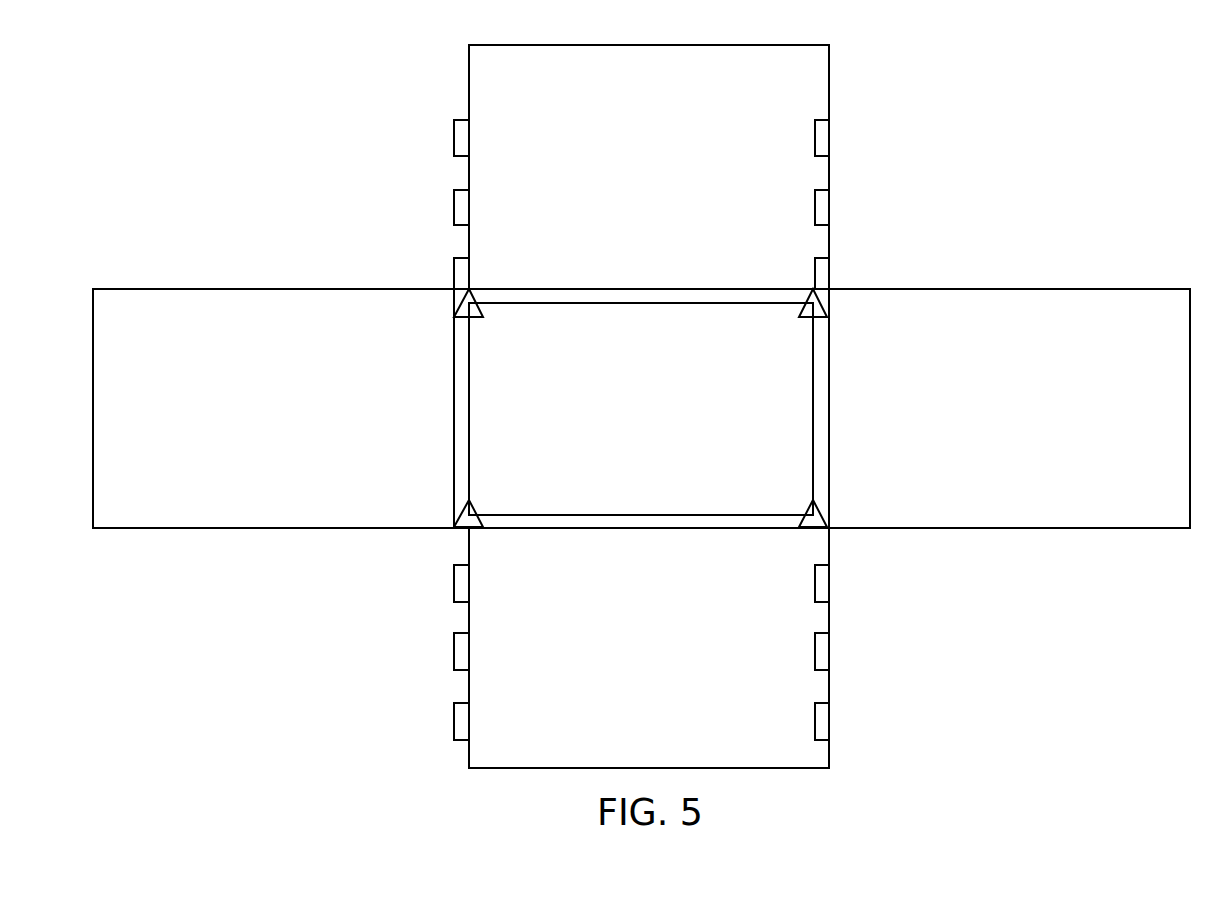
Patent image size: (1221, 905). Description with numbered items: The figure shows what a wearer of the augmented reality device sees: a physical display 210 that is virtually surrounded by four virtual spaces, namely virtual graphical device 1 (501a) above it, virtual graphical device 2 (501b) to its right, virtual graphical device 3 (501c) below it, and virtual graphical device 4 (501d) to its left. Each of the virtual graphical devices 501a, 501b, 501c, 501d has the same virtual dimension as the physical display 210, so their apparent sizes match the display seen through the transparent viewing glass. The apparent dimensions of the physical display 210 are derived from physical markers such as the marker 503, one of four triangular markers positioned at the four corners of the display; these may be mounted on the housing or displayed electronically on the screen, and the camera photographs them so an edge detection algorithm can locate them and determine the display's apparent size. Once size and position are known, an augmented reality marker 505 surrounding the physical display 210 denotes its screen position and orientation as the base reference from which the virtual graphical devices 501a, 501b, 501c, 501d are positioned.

The virtual graphical device 1 501a is at (622, 236).
The virtual graphical device 2 501b is at (982, 458).
The virtual graphical device 3 501c is at (622, 734).
The virtual graphical device 4 501d is at (245, 458).
The physical display 210 is at (662, 470).
The marker 503 is at (826, 303).
The augmented reality marker 505 is at (463, 415).